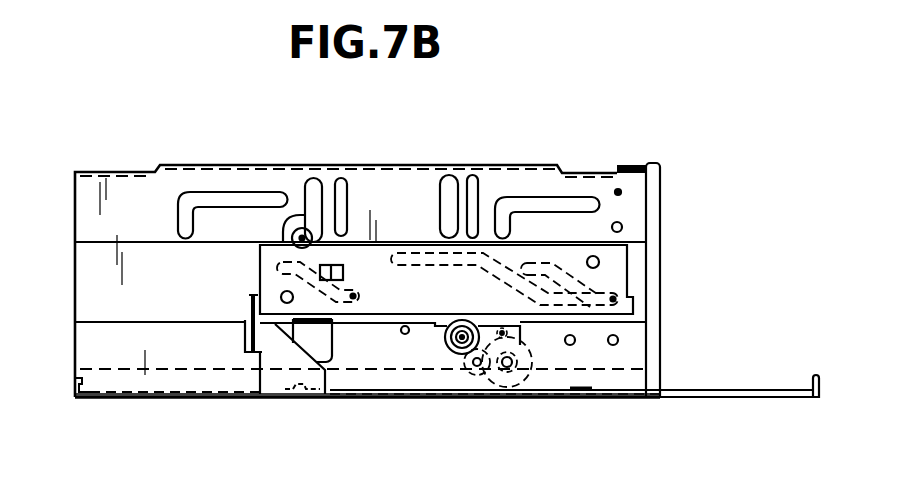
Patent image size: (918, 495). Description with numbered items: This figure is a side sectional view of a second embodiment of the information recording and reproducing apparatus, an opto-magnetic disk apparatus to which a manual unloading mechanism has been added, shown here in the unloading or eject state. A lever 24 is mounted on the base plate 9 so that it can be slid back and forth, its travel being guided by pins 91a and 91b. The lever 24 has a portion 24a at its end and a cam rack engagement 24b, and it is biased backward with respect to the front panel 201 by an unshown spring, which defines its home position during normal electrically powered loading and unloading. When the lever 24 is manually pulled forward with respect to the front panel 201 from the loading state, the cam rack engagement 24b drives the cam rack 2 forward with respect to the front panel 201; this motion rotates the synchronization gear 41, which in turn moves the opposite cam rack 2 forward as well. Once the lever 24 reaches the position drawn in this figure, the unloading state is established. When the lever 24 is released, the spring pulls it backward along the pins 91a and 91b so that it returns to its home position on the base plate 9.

The base plate 9 is at (132, 397).
The front panel 201 is at (660, 190).
The cam rack 2 is at (618, 272).
The cam rack engagement 24b is at (280, 352).
The synchronization gear 41 is at (487, 392).
The pin 91a is at (300, 397).
The pin 91b is at (580, 390).
The lever 24 is at (723, 398).
The portion 24a is at (819, 383).